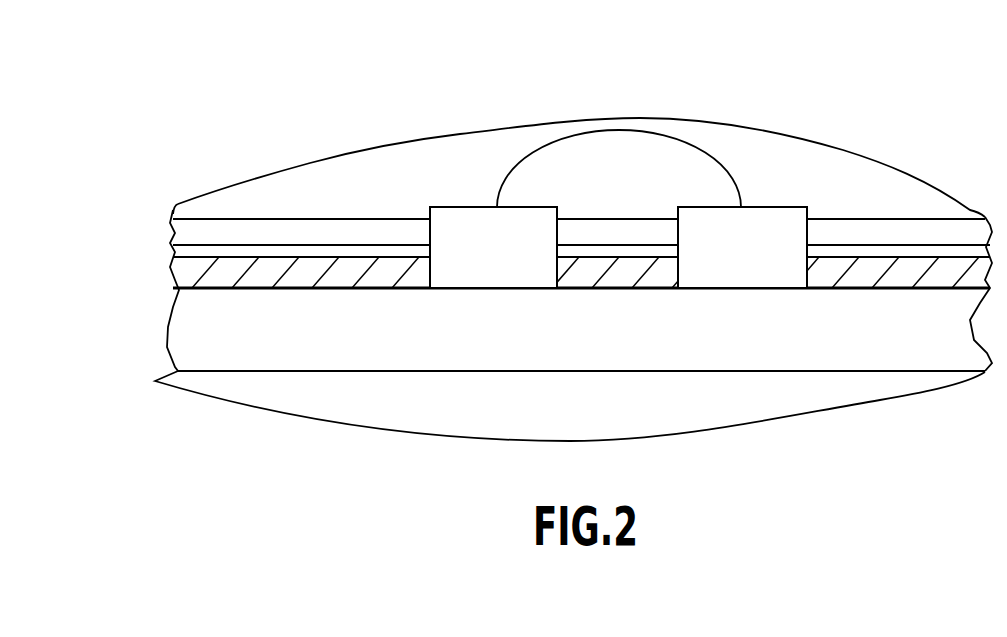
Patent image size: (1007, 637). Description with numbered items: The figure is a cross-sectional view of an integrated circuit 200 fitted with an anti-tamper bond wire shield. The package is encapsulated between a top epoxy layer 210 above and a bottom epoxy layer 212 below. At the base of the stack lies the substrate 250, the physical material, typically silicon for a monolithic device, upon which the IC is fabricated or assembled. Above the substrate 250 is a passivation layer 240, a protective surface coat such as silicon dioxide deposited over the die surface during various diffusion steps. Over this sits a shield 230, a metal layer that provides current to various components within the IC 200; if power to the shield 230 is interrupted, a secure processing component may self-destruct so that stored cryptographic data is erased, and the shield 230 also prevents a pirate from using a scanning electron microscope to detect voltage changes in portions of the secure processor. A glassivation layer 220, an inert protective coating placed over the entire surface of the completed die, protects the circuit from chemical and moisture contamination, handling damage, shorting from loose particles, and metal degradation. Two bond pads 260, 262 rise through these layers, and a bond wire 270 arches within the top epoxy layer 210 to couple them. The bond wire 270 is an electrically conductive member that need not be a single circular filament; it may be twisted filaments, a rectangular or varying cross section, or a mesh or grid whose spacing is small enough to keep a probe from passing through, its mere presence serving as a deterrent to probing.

The integrated circuit 200 is at (268, 80).
The top epoxy layer 210 is at (323, 180).
The bottom epoxy layer 212 is at (312, 418).
The glassivation layer 220 is at (172, 222).
The shield 230 is at (173, 250).
The passivation layer 240 is at (175, 270).
The substrate 250 is at (175, 332).
The bond pad 260 is at (450, 207).
The bond pad 262 is at (787, 207).
The bond wire 270 is at (714, 161).